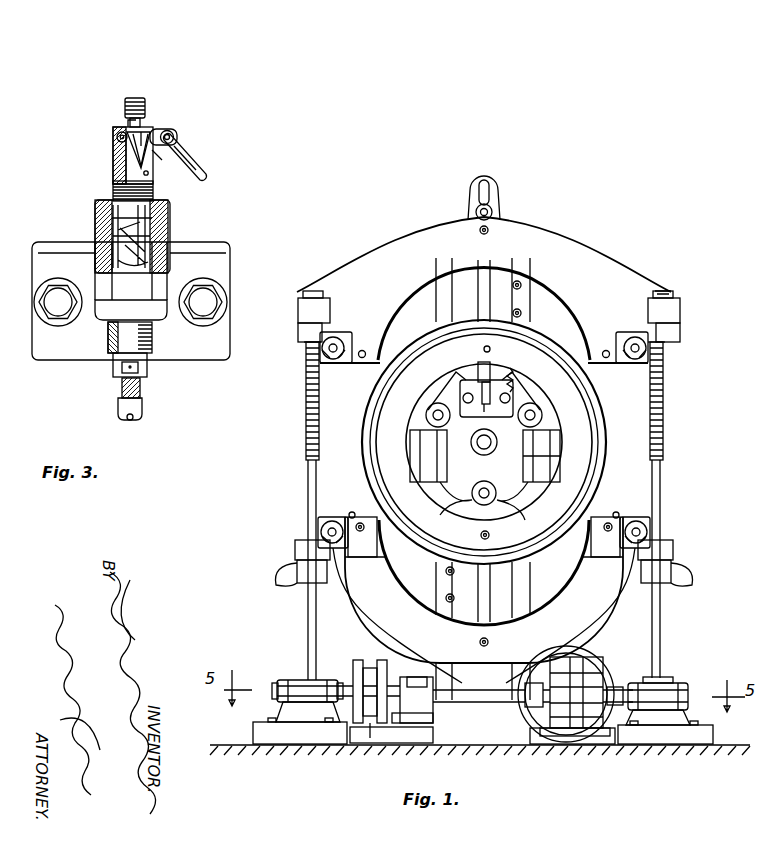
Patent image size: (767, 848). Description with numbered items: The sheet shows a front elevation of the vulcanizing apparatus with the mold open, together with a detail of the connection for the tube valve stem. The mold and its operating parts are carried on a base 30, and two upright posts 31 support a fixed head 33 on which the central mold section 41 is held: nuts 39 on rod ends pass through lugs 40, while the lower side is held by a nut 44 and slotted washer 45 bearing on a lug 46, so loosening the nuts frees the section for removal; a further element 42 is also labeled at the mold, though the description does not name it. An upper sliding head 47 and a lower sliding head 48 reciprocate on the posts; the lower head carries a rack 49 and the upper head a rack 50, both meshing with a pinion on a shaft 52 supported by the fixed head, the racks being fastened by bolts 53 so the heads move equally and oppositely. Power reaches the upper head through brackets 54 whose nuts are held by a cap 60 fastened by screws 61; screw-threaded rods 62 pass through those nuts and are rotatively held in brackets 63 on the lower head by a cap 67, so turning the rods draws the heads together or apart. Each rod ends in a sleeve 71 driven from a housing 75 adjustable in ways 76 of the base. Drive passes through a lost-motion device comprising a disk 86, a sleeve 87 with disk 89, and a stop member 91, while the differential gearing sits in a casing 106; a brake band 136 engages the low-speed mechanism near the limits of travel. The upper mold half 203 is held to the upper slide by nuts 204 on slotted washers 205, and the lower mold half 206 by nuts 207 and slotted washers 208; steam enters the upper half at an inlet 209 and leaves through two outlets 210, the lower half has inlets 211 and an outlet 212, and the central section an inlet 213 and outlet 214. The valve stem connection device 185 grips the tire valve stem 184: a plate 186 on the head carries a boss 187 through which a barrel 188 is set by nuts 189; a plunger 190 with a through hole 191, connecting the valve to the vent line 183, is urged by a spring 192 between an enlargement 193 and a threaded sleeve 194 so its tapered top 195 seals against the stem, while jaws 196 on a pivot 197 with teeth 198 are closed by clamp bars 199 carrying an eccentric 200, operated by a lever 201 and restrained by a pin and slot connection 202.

In FIG. 1, the base 30 is at (598, 742).
In FIG. 1, the upright posts 31 is at (430, 492).
In FIG. 1, the fixed head 33 is at (560, 452).
In FIG. 1, the nuts 39 is at (428, 412).
In FIG. 1, the lugs 40 is at (400, 405).
In FIG. 1, the central mold section 41 is at (570, 488).
In FIG. 1, the link 42 is at (545, 420).
In FIG. 1, the nut 44 is at (485, 483).
In FIG. 1, the slotted washer 45 is at (521, 506).
In FIG. 1, the lug 46 is at (472, 505).
In FIG. 1, the upper sliding head 47 is at (498, 200).
In FIG. 1, the lower sliding head 48 is at (662, 640).
In FIG. 1, the rack 49 is at (428, 475).
In FIG. 1, the rack 50 is at (513, 400).
In FIG. 1, the shaft 52 is at (471, 443).
In FIG. 1, the bolts 53 is at (522, 300).
In FIG. 1, the brackets 54 is at (300, 336).
In FIG. 1, the cap 60 is at (298, 303).
In FIG. 1, the screws 61 is at (666, 292).
In FIG. 1, the screw-threaded rods 62 is at (306, 415).
In FIG. 1, the brackets 63 is at (296, 548).
In FIG. 1, the cap 67 is at (298, 588).
In FIG. 1, the sleeve 71 is at (307, 628).
In FIG. 1, the housing 75 is at (296, 710).
In FIG. 1, the ways 76 is at (253, 728).
In FIG. 1, the disk 86 is at (335, 680).
In FIG. 1, the sleeve 87 is at (440, 712).
In FIG. 1, the disk 89 is at (390, 672).
In FIG. 1, the stop member 91 is at (370, 738).
In FIG. 1, the casing 106 is at (582, 744).
In FIG. 1, the brake band 136 is at (618, 672).
In FIG. 3, the vent line 183 is at (142, 420).
In FIG. 3, the tire valve stem 184 is at (146, 104).
In FIG. 1, the valve stem gripping device 185 is at (482, 392).
In FIG. 3, the plate 186 is at (215, 330).
In FIG. 3, the boss 187 is at (185, 240).
In FIG. 3, the barrel 188 is at (103, 252).
In FIG. 3, the nuts 189 is at (110, 222).
In FIG. 3, the plunger 190 is at (158, 208).
In FIG. 3, the hole 191 is at (165, 215).
In FIG. 3, the spring 192 is at (172, 260).
In FIG. 3, the enlargement 193 is at (103, 240).
In FIG. 3, the threaded sleeve 194 is at (148, 372).
In FIG. 3, the tapered top 195 is at (158, 152).
In FIG. 3, the jaws 196 is at (113, 146).
In FIG. 3, the pivot 197 is at (126, 162).
In FIG. 3, the teeth 198 is at (113, 140).
In FIG. 3, the clamp bars 199 is at (175, 132).
In FIG. 3, the eccentric 200 is at (180, 150).
In FIG. 3, the lever 201 is at (196, 172).
In FIG. 3, the pin and slot connection 202 is at (155, 130).
In FIG. 1, the upper mold half 203 is at (548, 240).
In FIG. 1, the nuts 204 is at (665, 370).
In FIG. 1, the slotted washers 205 is at (305, 372).
In FIG. 1, the lower mold half 206 is at (555, 625).
In FIG. 1, the nuts 207 is at (650, 538).
In FIG. 1, the slotted washers 208 is at (322, 530).
In FIG. 1, the steam inlet 209 is at (480, 229).
In FIG. 1, the outlets 210 is at (362, 350).
In FIG. 1, the inlets 211 is at (360, 532).
In FIG. 1, the outlet 212 is at (489, 642).
In FIG. 1, the inlet 213 is at (491, 350).
In FIG. 1, the outlet 214 is at (490, 535).